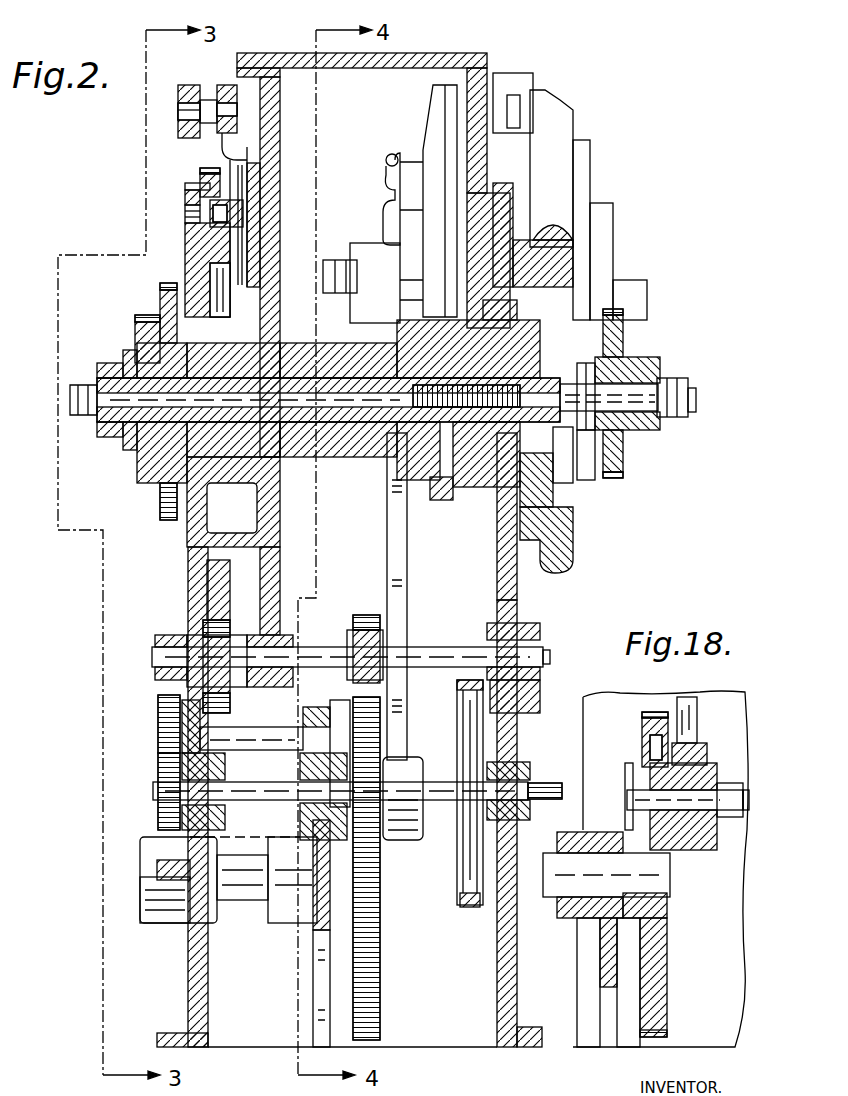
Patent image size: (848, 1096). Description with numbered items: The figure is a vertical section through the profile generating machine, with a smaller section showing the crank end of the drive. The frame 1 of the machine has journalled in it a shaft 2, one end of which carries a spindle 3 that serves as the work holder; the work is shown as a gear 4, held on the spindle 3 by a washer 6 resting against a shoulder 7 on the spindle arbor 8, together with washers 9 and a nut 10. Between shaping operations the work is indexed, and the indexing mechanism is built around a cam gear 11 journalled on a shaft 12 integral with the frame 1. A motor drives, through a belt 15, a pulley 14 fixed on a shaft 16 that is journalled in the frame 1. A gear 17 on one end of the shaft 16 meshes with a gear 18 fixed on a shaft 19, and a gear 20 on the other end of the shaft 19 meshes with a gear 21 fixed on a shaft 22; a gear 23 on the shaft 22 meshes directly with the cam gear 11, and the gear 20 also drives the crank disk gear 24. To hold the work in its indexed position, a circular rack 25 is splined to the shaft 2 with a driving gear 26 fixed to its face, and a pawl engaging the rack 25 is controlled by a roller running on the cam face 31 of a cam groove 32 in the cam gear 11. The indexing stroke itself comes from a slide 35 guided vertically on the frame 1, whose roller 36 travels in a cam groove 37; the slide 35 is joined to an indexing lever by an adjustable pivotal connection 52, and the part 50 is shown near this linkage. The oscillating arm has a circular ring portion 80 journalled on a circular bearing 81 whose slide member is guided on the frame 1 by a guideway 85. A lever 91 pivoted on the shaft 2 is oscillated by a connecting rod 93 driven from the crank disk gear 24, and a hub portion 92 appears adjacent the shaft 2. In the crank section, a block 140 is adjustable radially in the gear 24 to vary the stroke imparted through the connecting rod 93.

In FIG. 2, the frame 1 is at (513, 593).
In FIG. 2, the shaft 2 is at (95, 420).
In FIG. 2, the spindle 3 is at (637, 398).
In FIG. 2, the gear 4 is at (623, 325).
In FIG. 2, the washer 6 is at (593, 433).
In FIG. 2, the shoulder 7 is at (585, 363).
In FIG. 2, the spindle arbor 8 is at (627, 430).
In FIG. 2, the washers 9 is at (643, 428).
In FIG. 2, the nut 10 is at (683, 413).
In FIG. 2, the cam gear 11 is at (187, 592).
In FIG. 2, the shaft 12 is at (272, 347).
In FIG. 2, the pulley 14 is at (457, 867).
In FIG. 2, the belt 15 is at (475, 907).
In FIG. 2, the shaft 16 is at (527, 783).
In FIG. 2, the gear 17 is at (158, 792).
In FIG. 2, the gear 18 is at (158, 715).
In FIG. 2, the shaft 19 is at (243, 742).
In FIG. 2, the gear 20 is at (383, 757).
In FIG. 2, the gear 21 is at (380, 613).
In FIG. 2, the shaft 22 is at (430, 648).
In FIG. 2, the gear 23 is at (203, 633).
In FIG. 2, the crank disk gear 24 is at (380, 983).
In FIG. 18, the crank disk gear 24 is at (663, 950).
In FIG. 2, the circular rack 25 is at (163, 298).
In FIG. 2, the driving gear 26 is at (135, 322).
In FIG. 2, the cam face 31 is at (188, 232).
In FIG. 2, the cam groove 32 is at (185, 214).
In FIG. 2, the slide 35 is at (226, 85).
In FIG. 2, the roller 36 is at (222, 200).
In FIG. 2, the cam groove 37 is at (217, 198).
In FIG. 2, the plate 50 is at (187, 183).
In FIG. 2, the pivotal connection 52 is at (190, 72).
In FIG. 2, the circular ring portion 80 is at (572, 558).
In FIG. 2, the circular bearing 81 is at (573, 527).
In FIG. 2, the guideway 85 is at (497, 553).
In FIG. 2, the lever 91 is at (430, 108).
In FIG. 2, the clutch hub 92 is at (420, 480).
In FIG. 2, the connecting rod 93 is at (393, 553).
In FIG. 18, the connecting rod 93 is at (690, 697).
In FIG. 18, the block 140 is at (640, 758).